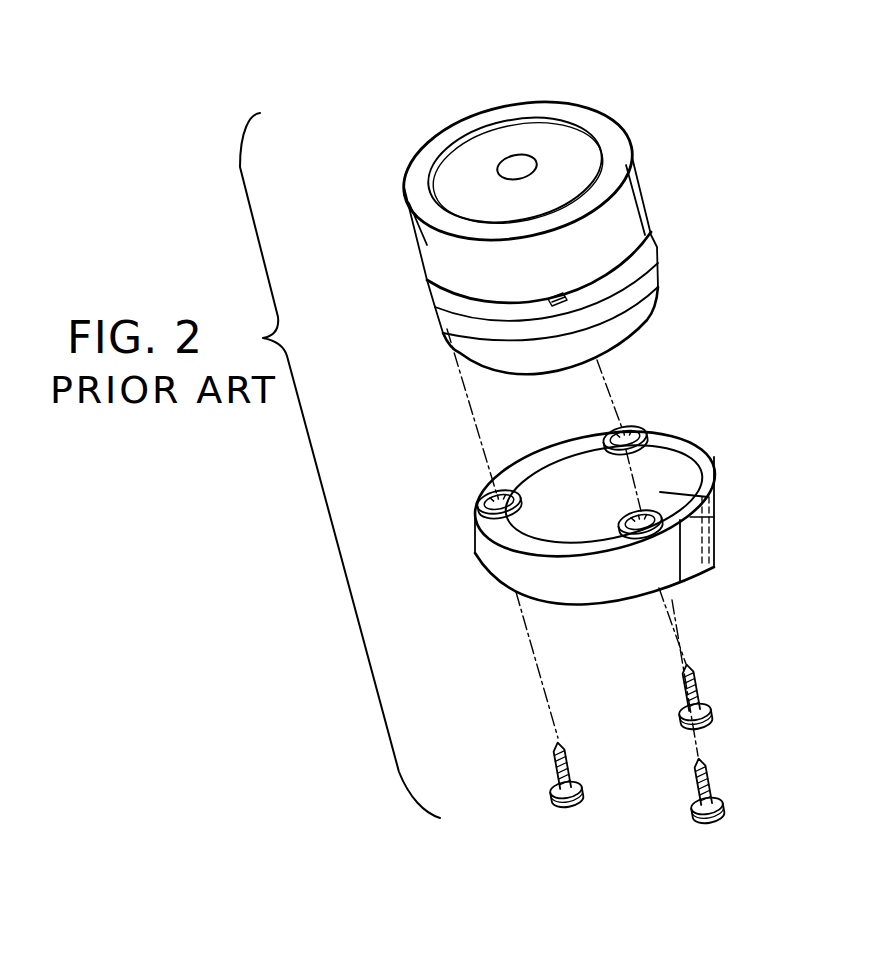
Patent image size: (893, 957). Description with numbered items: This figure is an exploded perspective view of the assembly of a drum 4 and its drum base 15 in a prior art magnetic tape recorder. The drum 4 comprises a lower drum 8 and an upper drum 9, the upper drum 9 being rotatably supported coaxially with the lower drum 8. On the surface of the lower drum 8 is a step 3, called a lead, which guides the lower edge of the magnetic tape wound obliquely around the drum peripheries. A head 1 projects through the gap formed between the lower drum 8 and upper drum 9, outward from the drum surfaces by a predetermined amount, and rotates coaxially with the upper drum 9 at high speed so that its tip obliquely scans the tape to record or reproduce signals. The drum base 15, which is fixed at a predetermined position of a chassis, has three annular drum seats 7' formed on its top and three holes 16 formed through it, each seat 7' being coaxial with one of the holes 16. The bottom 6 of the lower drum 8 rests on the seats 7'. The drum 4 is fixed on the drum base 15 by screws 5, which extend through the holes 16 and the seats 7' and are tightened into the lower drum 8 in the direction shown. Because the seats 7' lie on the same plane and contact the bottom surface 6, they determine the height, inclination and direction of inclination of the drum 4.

The drum 4 is at (640, 112).
The upper drum 9 is at (460, 128).
The lower drum 8 is at (650, 296).
The step 3 is at (614, 312).
The head 1 is at (548, 306).
The bottom 6 is at (503, 374).
The drum base 15 is at (697, 548).
The holes 16 is at (627, 432).
The annular drum seats 7' is at (598, 476).
The screws 5 is at (552, 790).